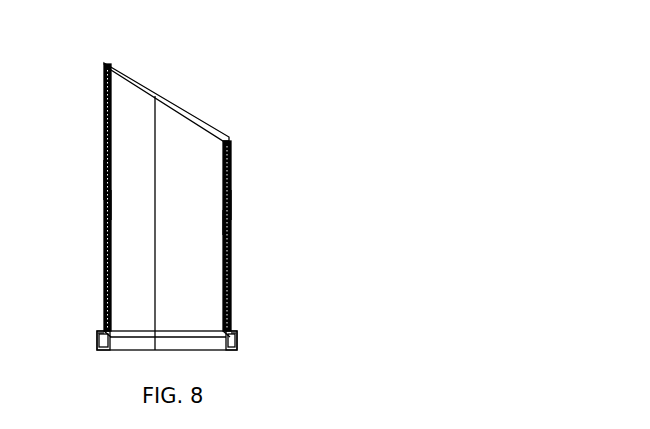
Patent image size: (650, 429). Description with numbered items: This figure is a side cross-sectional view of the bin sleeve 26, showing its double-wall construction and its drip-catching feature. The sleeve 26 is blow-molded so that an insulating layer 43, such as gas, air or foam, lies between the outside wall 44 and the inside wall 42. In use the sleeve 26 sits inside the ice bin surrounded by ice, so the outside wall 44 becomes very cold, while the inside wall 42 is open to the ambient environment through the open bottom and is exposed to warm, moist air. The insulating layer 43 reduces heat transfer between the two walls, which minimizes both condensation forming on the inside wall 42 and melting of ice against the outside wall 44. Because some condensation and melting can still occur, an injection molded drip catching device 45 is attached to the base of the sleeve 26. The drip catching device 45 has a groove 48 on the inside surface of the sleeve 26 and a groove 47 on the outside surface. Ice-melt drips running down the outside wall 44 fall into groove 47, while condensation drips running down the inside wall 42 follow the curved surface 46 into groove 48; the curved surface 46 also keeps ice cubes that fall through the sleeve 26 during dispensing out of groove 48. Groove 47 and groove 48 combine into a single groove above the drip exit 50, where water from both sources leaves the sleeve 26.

The sleeve 26 is at (201, 95).
The inside wall 42 is at (103, 145).
The insulating layer 43 is at (106, 205).
The outside wall 44 is at (103, 175).
The drip catching device 45 is at (239, 340).
The curved surface 46 is at (110, 333).
The groove 47 is at (100, 331).
The groove 48 is at (104, 352).
The drip exit 50 is at (231, 352).